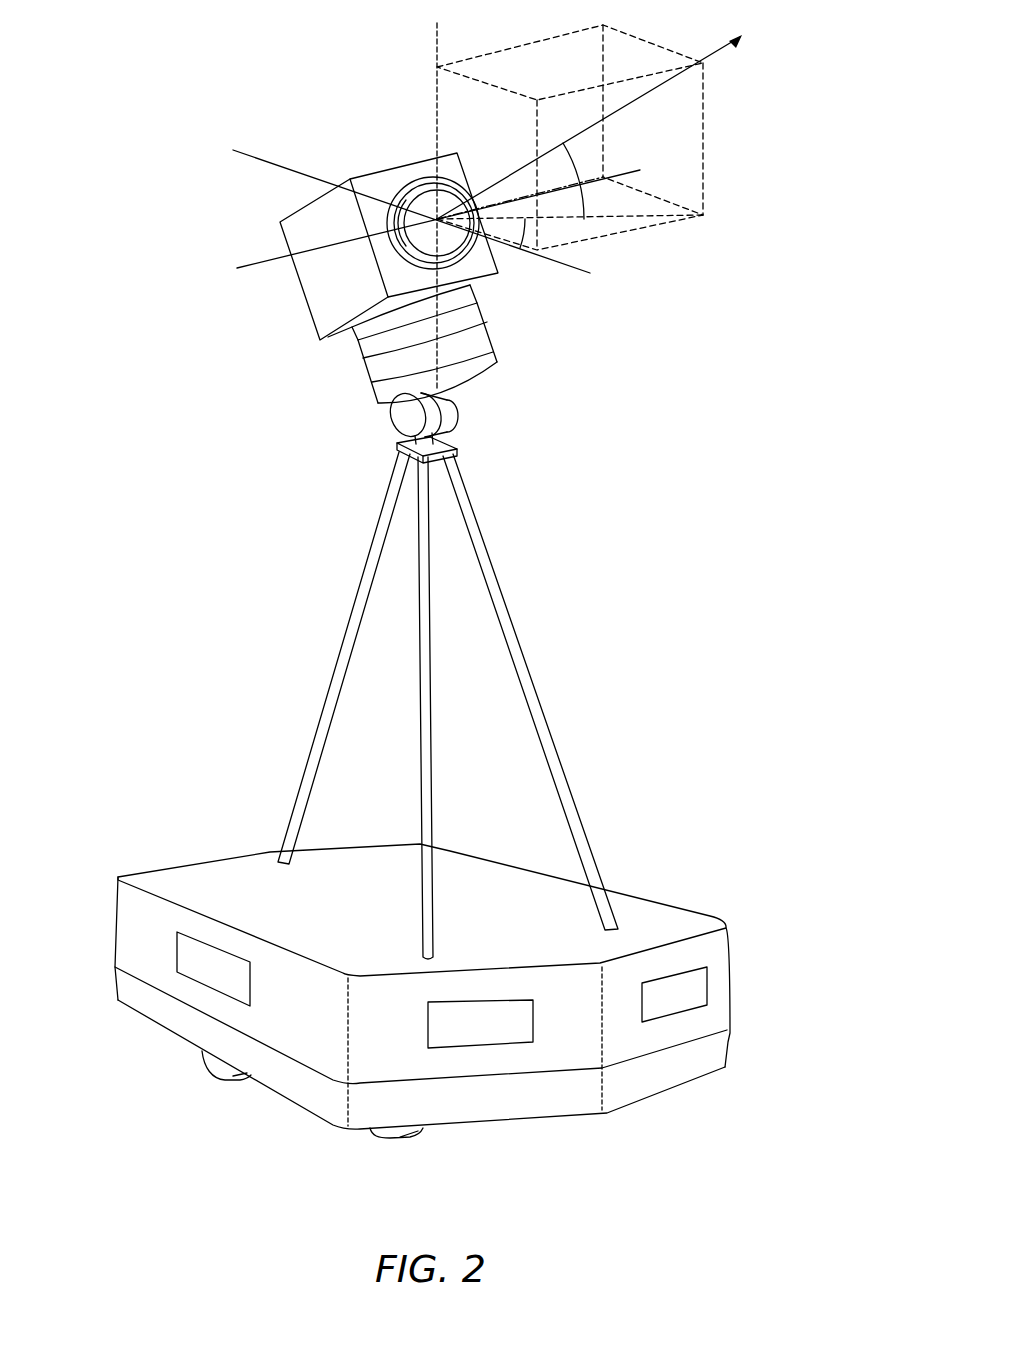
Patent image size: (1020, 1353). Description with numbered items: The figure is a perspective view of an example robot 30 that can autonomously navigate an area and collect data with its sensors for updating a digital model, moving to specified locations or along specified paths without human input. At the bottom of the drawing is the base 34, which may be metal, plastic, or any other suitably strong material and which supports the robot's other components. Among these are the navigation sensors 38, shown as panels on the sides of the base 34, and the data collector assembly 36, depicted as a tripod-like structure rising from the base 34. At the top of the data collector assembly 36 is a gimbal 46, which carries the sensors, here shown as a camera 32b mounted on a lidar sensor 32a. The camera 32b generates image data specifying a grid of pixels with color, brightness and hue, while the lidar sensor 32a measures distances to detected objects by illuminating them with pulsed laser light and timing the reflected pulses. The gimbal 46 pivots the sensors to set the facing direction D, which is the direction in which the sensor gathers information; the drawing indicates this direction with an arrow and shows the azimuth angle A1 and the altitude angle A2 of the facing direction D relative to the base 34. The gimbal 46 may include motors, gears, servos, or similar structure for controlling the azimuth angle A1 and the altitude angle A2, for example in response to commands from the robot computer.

The robot 30 is at (273, 108).
The lidar sensor 32a is at (487, 322).
The camera 32b is at (466, 174).
The base 34 is at (207, 878).
The data collector assembly 36 is at (258, 390).
The navigation sensors 38 is at (190, 975).
The gimbal 46 is at (403, 413).
The azimuth angle A1 is at (527, 238).
The altitude angle A2 is at (586, 200).
The facing direction D is at (717, 50).